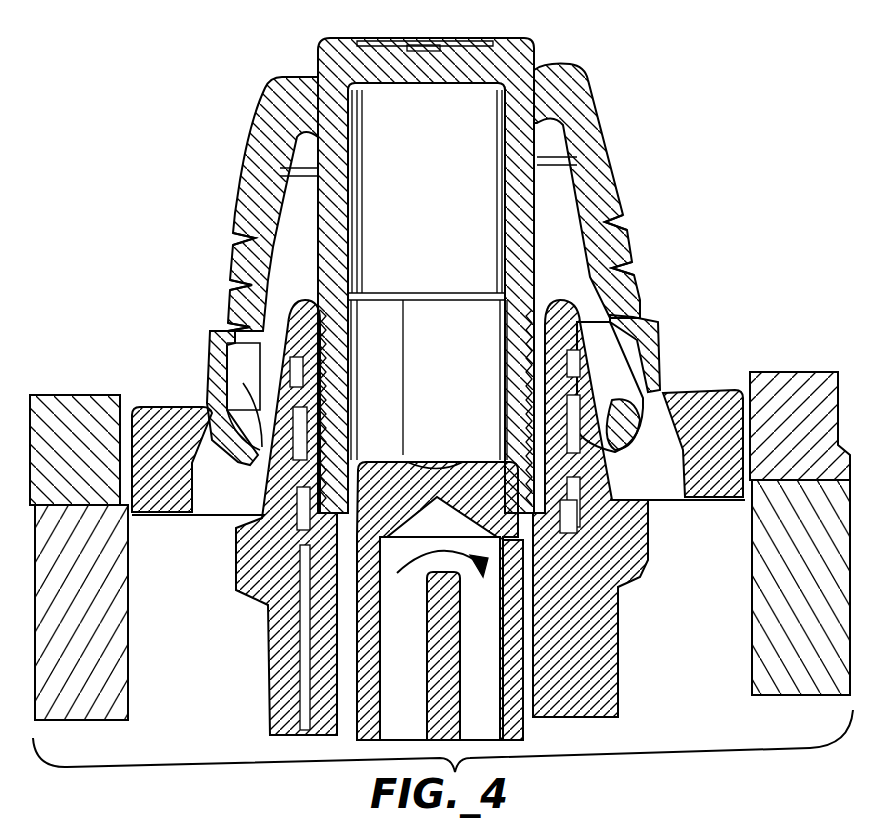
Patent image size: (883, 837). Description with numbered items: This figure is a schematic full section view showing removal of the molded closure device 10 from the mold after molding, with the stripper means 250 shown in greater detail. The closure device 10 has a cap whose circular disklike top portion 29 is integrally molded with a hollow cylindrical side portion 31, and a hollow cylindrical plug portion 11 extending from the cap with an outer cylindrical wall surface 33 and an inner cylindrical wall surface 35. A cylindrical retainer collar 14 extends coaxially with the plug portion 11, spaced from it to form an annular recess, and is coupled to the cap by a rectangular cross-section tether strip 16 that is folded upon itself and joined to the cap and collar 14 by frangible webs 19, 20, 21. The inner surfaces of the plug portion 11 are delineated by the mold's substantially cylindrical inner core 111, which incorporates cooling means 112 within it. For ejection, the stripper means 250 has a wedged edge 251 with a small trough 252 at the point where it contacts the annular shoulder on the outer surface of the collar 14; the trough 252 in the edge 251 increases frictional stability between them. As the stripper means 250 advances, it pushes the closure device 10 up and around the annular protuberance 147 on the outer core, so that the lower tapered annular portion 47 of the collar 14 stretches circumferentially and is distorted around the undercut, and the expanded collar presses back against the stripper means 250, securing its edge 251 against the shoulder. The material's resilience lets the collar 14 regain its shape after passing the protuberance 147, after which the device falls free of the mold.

The safety closure device 10 is at (608, 103).
The cylindrical plug portion 11 is at (343, 168).
The retainer collar 14 is at (228, 287).
The tether strip 16 is at (644, 278).
The frangible web 19 is at (580, 223).
The frangible web 20 is at (597, 312).
The frangible web 21 is at (590, 264).
The circular disklike top portion 29 is at (333, 47).
The hollow cylindrical side portion 31 is at (252, 148).
The outer cylindrical wall surface 33 is at (316, 210).
The inner cylindrical wall surface 35 is at (347, 397).
The lower tapered annular portion 47 is at (233, 462).
The inner core 111 is at (513, 634).
The cooling means 112 is at (390, 657).
The annular protuberance 147 is at (235, 568).
The stripper means 250 is at (763, 372).
The wedged edge 251 is at (648, 330).
The trough 252 is at (682, 392).